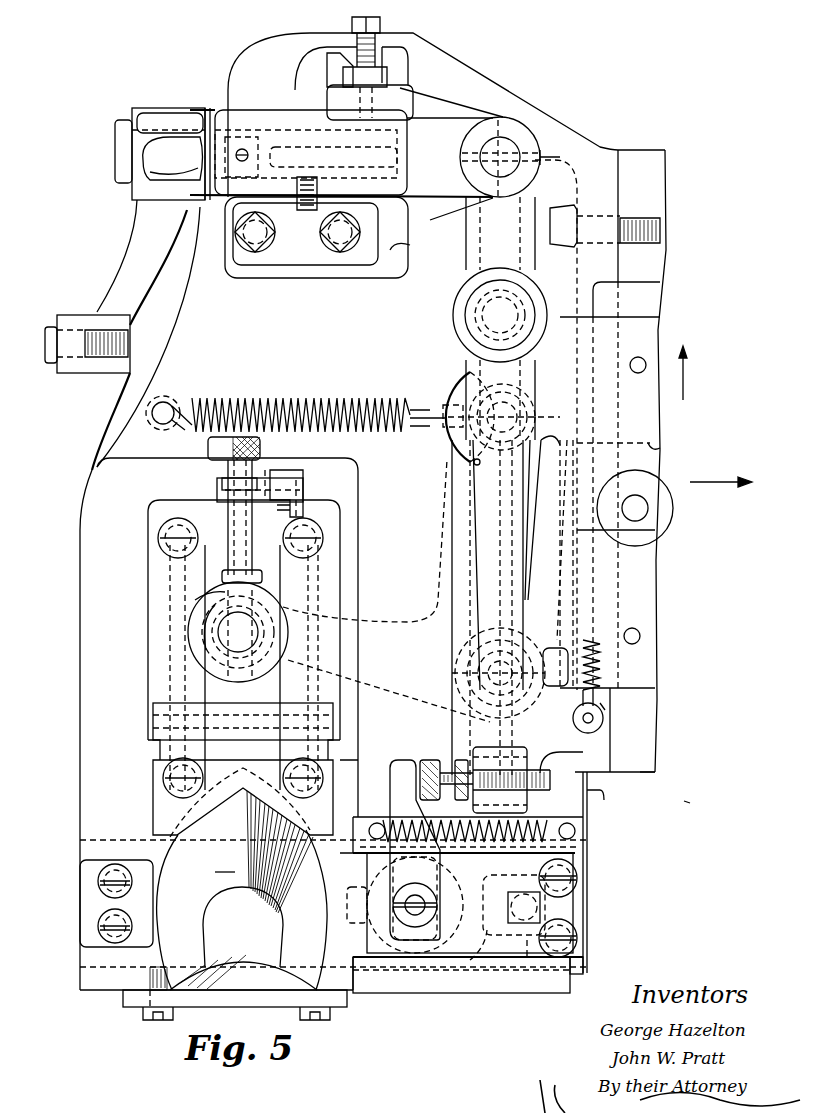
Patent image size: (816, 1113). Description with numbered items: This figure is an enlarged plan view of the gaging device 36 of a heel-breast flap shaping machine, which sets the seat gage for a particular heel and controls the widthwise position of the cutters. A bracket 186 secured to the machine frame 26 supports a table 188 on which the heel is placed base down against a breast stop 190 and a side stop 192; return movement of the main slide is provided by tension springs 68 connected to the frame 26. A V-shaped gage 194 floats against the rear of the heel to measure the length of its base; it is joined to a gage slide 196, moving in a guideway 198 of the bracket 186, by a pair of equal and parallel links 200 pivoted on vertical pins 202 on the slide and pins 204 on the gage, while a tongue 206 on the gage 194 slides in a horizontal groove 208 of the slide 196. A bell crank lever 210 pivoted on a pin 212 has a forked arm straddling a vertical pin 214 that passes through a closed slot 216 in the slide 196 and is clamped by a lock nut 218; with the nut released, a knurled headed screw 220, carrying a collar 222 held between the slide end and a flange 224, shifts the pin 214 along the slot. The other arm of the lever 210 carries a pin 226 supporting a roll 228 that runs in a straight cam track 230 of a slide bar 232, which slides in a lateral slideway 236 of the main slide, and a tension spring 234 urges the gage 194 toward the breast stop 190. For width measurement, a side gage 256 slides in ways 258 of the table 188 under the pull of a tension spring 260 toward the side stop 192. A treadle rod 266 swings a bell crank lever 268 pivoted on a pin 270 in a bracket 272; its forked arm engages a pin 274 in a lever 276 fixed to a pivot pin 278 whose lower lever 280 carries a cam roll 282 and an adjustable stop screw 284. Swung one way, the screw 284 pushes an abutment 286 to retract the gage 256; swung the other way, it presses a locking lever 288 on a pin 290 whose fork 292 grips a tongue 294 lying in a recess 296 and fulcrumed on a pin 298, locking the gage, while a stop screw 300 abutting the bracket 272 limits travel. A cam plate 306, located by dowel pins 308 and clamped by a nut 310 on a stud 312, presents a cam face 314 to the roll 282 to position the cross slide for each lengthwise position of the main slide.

The machine frame 26 is at (645, 772).
The gaging device 36 is at (692, 809).
The tension springs 68 is at (605, 667).
The bracket 186 is at (118, 420).
The table 188 is at (382, 993).
The breast stop 190 is at (270, 1007).
The side stop 192 is at (95, 945).
The V-shaped gage 194 is at (153, 812).
The gage slide 196 is at (197, 632).
The guideway 198 is at (175, 473).
The links 200 is at (280, 720).
The vertical pins 202 is at (160, 548).
The vertical pins 204 is at (163, 778).
The tongue 206 is at (153, 746).
The horizontal groove 208 is at (150, 690).
The bell crank lever 210 is at (388, 615).
The pin 212 is at (495, 640).
The vertical pin 214 is at (218, 640).
The closed slot 216 is at (222, 577).
The lock nut 218 is at (195, 600).
The knurled headed screw 220 is at (208, 448).
The collar 222 is at (217, 496).
The flange 224 is at (292, 470).
The pin 226 is at (475, 390).
The roll 228 is at (500, 405).
The cam track 230 is at (470, 463).
The slide bar 232 is at (628, 440).
The tension spring 234 is at (245, 396).
The lateral slideway 236 is at (660, 446).
The side gage 256 is at (320, 900).
The ways 258 is at (487, 968).
The tension spring 260 is at (575, 828).
The rod 266 is at (70, 375).
The bell crank lever 268 is at (122, 260).
The pin 270 is at (178, 135).
The bracket 272 is at (292, 272).
The pin 274 is at (140, 160).
The lever 276 is at (440, 118).
The pivot pin 278 is at (515, 140).
The lever 280 is at (466, 240).
The cam roll 282 is at (452, 300).
The adjustable stop screw 284 is at (428, 760).
The abutment 286 is at (587, 800).
The locking lever 288 is at (398, 757).
The pin 290 is at (435, 945).
The fork 292 is at (420, 950).
The tongue 294 is at (487, 890).
The recess 296 is at (528, 960).
The pin 298 is at (508, 905).
The stop screw 300 is at (380, 28).
The cam plate 306 is at (648, 316).
The dowel pins 308 is at (638, 357).
The clamping nut 310 is at (650, 548).
The stud 312 is at (650, 507).
The cam face 314 is at (540, 465).